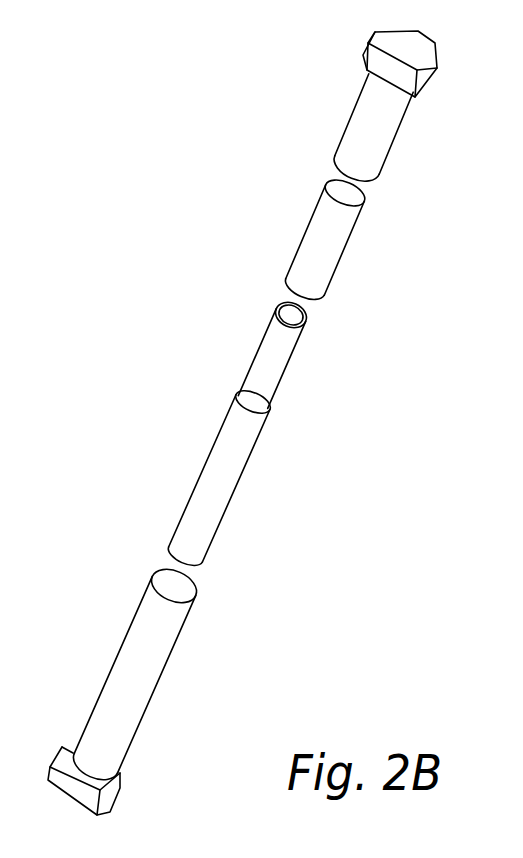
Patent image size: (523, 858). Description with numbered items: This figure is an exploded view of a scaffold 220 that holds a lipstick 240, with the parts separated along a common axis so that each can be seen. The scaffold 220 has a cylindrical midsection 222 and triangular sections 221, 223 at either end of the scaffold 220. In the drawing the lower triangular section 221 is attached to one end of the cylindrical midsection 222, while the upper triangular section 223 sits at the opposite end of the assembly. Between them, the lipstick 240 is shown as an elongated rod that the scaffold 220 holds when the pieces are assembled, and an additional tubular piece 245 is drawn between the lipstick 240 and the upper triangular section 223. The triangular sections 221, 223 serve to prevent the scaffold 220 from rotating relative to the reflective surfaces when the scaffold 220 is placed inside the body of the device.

The scaffold 220 is at (128, 94).
The triangular section 221 is at (120, 778).
The cylindrical midsection 222 is at (127, 625).
The triangular section 223 is at (366, 70).
The lipstick 240 is at (212, 445).
The sleeve 245 is at (303, 242).